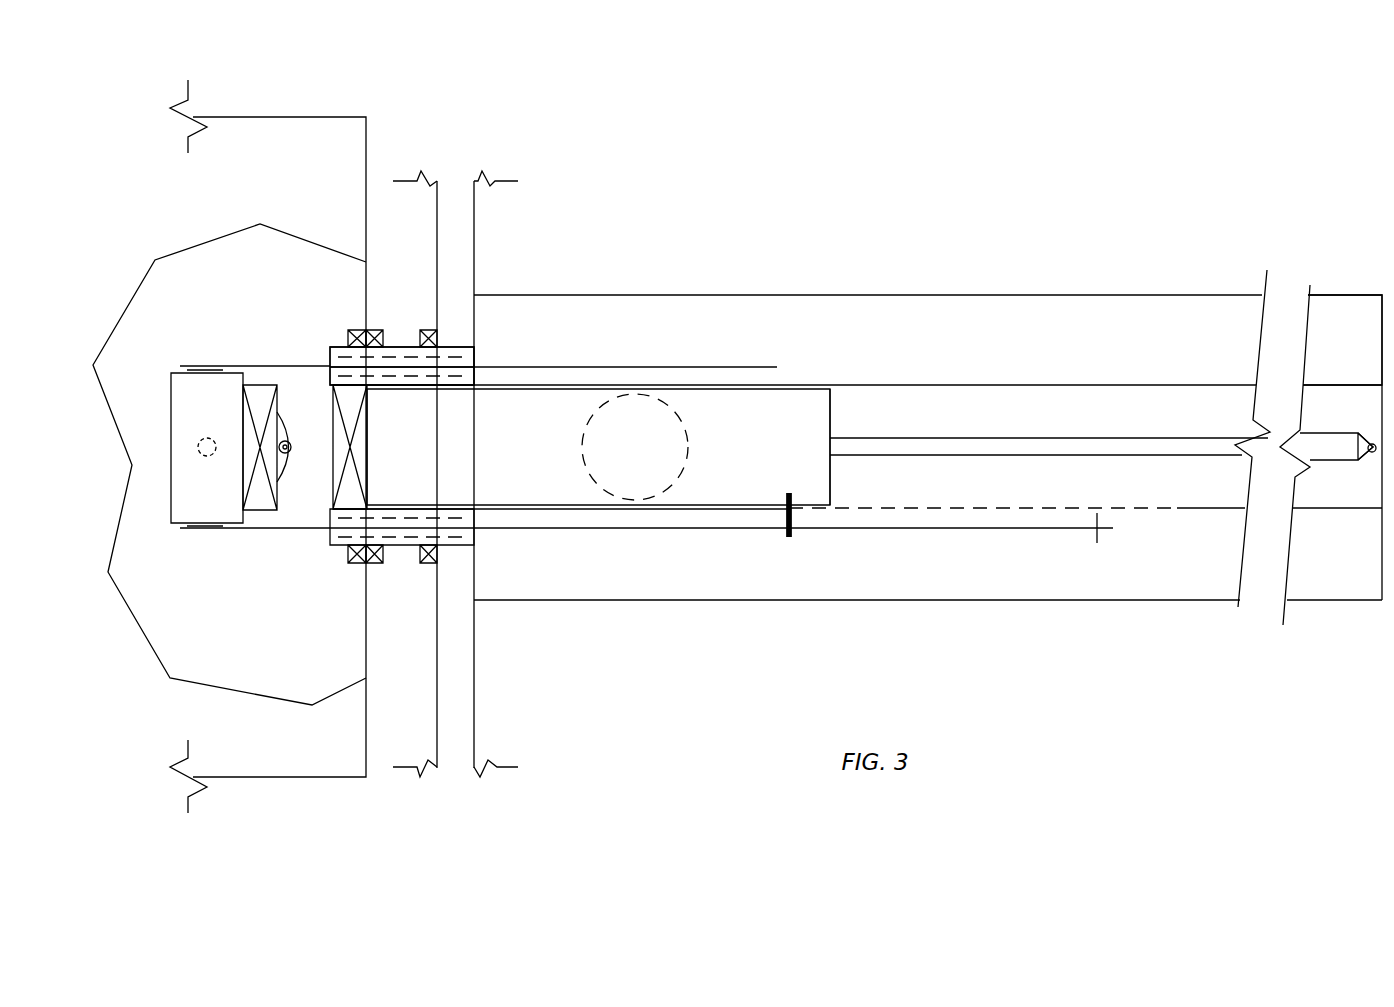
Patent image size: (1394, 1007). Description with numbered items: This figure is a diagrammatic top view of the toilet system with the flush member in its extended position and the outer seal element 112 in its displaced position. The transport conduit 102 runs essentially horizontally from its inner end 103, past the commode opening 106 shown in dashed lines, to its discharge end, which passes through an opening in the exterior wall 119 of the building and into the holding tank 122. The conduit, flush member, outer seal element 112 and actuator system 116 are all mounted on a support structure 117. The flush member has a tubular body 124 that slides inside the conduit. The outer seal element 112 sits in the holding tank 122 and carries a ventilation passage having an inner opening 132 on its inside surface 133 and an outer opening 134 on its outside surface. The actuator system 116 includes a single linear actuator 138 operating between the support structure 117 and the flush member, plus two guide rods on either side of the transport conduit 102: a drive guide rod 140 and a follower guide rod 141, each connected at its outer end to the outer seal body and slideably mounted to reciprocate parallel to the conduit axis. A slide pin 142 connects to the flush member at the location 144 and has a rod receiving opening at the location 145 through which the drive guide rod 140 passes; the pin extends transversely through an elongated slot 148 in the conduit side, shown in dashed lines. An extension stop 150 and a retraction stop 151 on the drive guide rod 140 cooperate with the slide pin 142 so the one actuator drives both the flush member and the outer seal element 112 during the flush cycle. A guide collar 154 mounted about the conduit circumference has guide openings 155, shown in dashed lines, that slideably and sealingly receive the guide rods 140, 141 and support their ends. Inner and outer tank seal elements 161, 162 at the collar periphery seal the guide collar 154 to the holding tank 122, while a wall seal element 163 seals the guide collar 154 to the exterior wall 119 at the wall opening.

The transport conduit 102 is at (998, 385).
The inner end 103 is at (1343, 362).
The commode opening 106 is at (688, 447).
The outer seal element 112 is at (148, 546).
The actuator system 116 is at (1326, 498).
The support structure 117 is at (1040, 295).
The exterior wall 119 is at (474, 205).
The holding tank 122 is at (278, 117).
The tubular body 124 is at (558, 510).
The inner opening 132 is at (288, 453).
The inside surface 133 is at (278, 413).
The outer opening 134 is at (198, 445).
The linear actuator 138 is at (1355, 460).
The drive guide rod 140 is at (943, 530).
The follower guide rod 141 is at (633, 367).
The slide pin 142 is at (793, 517).
The slide pin connection location 144 is at (804, 488).
The slide opening location 145 is at (794, 570).
The elongated slot 148 is at (1138, 508).
The extension stop 150 is at (785, 531).
The retraction stop 151 is at (1097, 537).
The guide collar 154 is at (332, 350).
The guide openings 155 is at (447, 347).
The inner tank seal element 161 is at (360, 330).
The outer tank seal element 162 is at (378, 330).
The wall seal element 163 is at (430, 566).